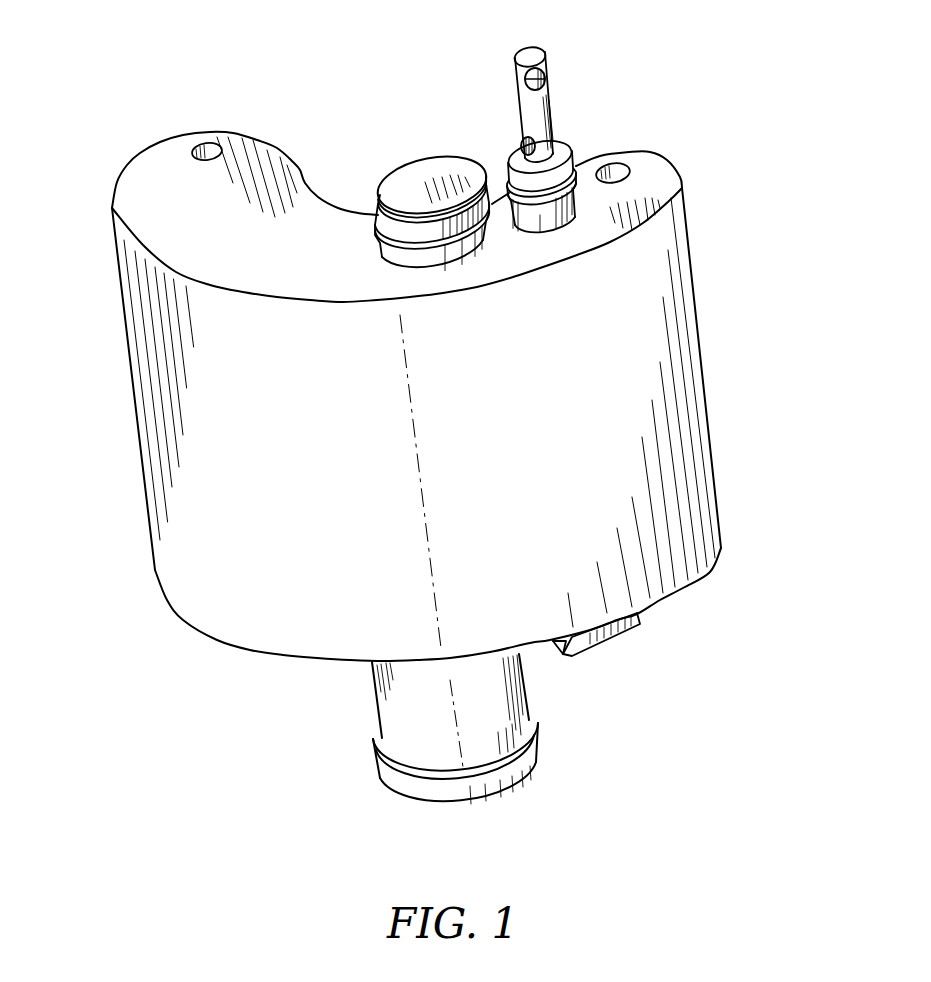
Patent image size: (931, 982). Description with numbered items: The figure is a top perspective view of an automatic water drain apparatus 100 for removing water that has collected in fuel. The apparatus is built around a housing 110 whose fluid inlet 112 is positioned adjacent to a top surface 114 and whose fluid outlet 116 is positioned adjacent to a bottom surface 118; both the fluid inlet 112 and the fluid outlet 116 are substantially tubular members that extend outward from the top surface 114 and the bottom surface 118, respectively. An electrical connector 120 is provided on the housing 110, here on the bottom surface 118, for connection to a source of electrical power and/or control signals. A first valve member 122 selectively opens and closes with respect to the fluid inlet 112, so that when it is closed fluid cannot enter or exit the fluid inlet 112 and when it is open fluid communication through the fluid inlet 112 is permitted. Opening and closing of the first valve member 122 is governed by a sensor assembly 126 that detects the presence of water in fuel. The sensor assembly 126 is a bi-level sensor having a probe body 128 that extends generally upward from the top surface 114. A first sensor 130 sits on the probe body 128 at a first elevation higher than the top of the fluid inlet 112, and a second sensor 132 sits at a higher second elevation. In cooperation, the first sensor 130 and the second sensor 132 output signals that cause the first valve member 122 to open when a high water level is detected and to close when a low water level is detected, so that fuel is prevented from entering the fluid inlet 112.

The automatic water drain apparatus 100 is at (160, 85).
The housing 110 is at (144, 154).
The fluid inlet 112 is at (378, 217).
The top surface 114 is at (270, 180).
The fluid outlet 116 is at (528, 695).
The bottom surface 118 is at (254, 650).
The electrical connector 120 is at (618, 647).
The first valve member 122 is at (403, 162).
The sensor assembly 126 is at (566, 50).
The probe body 128 is at (552, 114).
The first sensor 130 is at (525, 138).
The second sensor 132 is at (547, 76).